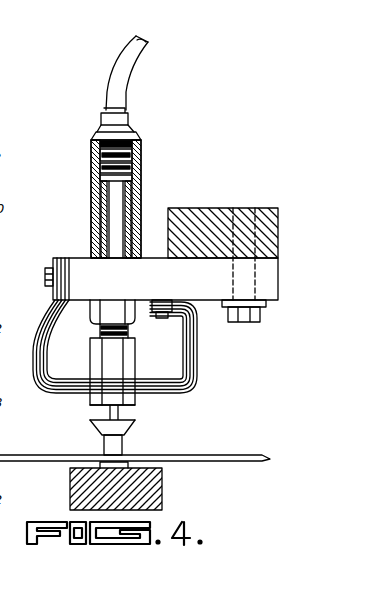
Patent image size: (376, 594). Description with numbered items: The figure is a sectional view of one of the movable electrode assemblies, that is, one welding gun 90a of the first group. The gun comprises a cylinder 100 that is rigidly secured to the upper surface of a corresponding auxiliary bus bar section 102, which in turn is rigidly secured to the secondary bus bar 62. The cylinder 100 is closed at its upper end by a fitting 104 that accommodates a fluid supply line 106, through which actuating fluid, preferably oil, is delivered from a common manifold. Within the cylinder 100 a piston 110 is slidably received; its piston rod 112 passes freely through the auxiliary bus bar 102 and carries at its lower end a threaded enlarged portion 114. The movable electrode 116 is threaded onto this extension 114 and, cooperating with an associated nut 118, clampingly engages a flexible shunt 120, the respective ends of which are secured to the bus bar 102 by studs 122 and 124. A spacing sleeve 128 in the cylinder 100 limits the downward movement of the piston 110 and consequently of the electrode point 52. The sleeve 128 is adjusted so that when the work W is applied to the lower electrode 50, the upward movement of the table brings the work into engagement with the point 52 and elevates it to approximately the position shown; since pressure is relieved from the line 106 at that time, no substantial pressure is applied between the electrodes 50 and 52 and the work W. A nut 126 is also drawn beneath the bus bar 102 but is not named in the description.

The fluid supply line 106 is at (133, 67).
The fitting 104 is at (137, 133).
The piston 110 is at (92, 156).
The cylinder 100 is at (100, 176).
The spacing sleeve 128 is at (101, 196).
The piston rod 112 is at (114, 224).
The stud 124 is at (53, 262).
The secondary bus bar 62 is at (182, 208).
The welding gun 90a is at (150, 181).
The auxiliary bus bar section 102 is at (262, 316).
The retaining nut 126 is at (92, 308).
The threaded enlarged portion 114 is at (100, 332).
The nut 118 is at (134, 348).
The flexible shunt 120 is at (42, 370).
The stud 122 is at (172, 316).
The movable electrode 116 is at (138, 422).
The electrode point 52 is at (130, 452).
The work W is at (34, 462).
The electrode 50 is at (150, 495).